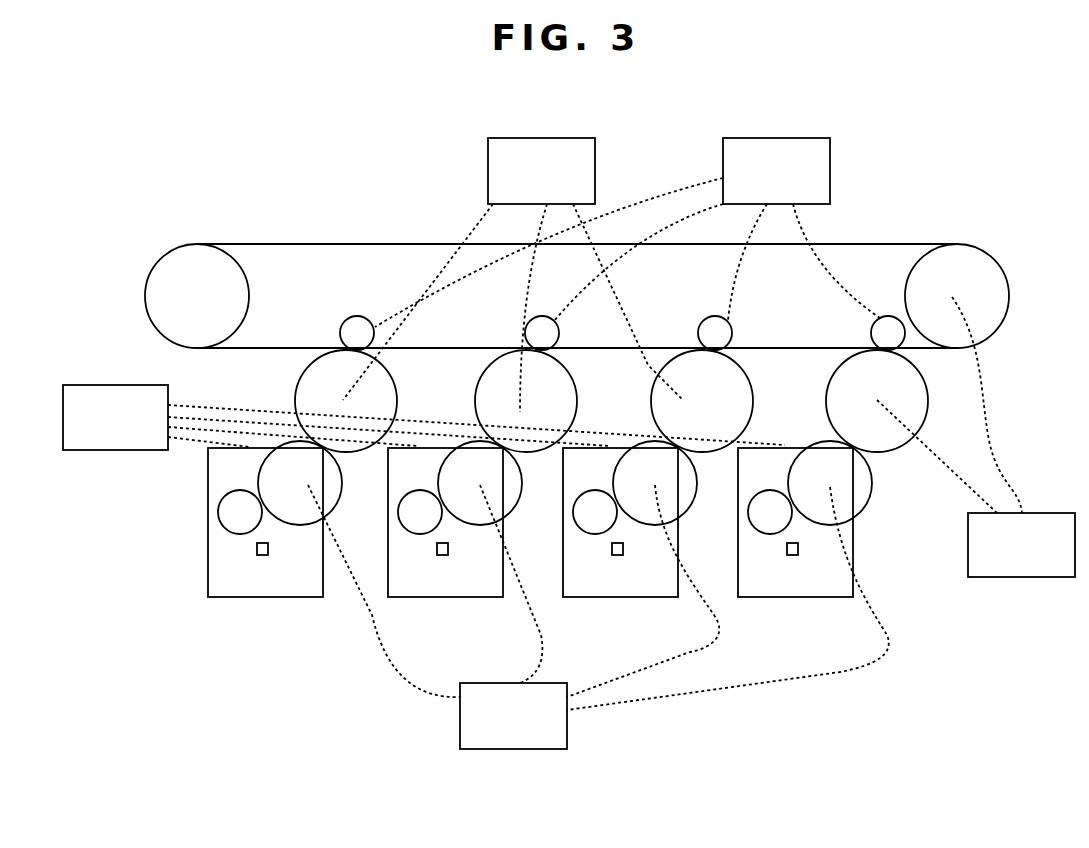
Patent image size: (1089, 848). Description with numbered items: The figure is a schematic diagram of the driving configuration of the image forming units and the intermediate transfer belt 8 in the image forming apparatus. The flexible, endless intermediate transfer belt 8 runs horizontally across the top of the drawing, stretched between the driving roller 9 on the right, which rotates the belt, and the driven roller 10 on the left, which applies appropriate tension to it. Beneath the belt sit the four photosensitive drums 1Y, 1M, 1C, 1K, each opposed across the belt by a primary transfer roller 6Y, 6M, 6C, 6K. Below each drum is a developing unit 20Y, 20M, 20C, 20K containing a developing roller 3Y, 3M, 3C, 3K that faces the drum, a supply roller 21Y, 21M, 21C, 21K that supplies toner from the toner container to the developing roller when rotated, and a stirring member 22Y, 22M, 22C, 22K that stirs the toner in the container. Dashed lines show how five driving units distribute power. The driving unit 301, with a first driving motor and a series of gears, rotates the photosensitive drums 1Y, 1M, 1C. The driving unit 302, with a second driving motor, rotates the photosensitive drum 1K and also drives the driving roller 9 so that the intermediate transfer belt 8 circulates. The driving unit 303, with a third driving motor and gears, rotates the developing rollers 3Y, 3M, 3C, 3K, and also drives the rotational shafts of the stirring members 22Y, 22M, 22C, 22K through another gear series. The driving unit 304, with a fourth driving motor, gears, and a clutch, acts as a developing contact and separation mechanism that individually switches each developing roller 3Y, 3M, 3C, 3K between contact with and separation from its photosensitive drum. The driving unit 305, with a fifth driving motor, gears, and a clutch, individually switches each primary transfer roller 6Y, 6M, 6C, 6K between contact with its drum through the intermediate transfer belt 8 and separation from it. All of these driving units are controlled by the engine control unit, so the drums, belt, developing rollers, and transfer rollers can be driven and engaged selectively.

The intermediate transfer belt 8 is at (422, 243).
The driving roller 9 is at (995, 333).
The driven roller 10 is at (144, 289).
The driving unit 301 is at (540, 137).
The driving unit 302 is at (1022, 580).
The driving unit 303 is at (514, 752).
The driving unit 304 is at (116, 384).
The driving unit 305 is at (775, 137).
The photosensitive drum 1Y is at (320, 358).
The photosensitive drum 1M is at (498, 358).
The photosensitive drum 1C is at (670, 357).
The photosensitive drum 1K is at (848, 357).
The developing roller 3Y is at (280, 446).
The developing roller 3M is at (460, 446).
The developing roller 3C is at (635, 446).
The developing roller 3K is at (813, 446).
The primary transfer roller 6Y is at (358, 316).
The primary transfer roller 6M is at (541, 316).
The primary transfer roller 6C is at (713, 316).
The primary transfer roller 6K is at (887, 316).
The developing unit 20Y is at (207, 531).
The developing unit 20M is at (503, 551).
The developing unit 20C is at (678, 551).
The developing unit 20K is at (853, 551).
The supply roller 21Y is at (234, 535).
The supply roller 21M is at (414, 535).
The supply roller 21C is at (589, 535).
The supply roller 21K is at (764, 535).
The stirring member 22Y is at (260, 556).
The stirring member 22M is at (440, 556).
The stirring member 22C is at (615, 556).
The stirring member 22K is at (790, 556).